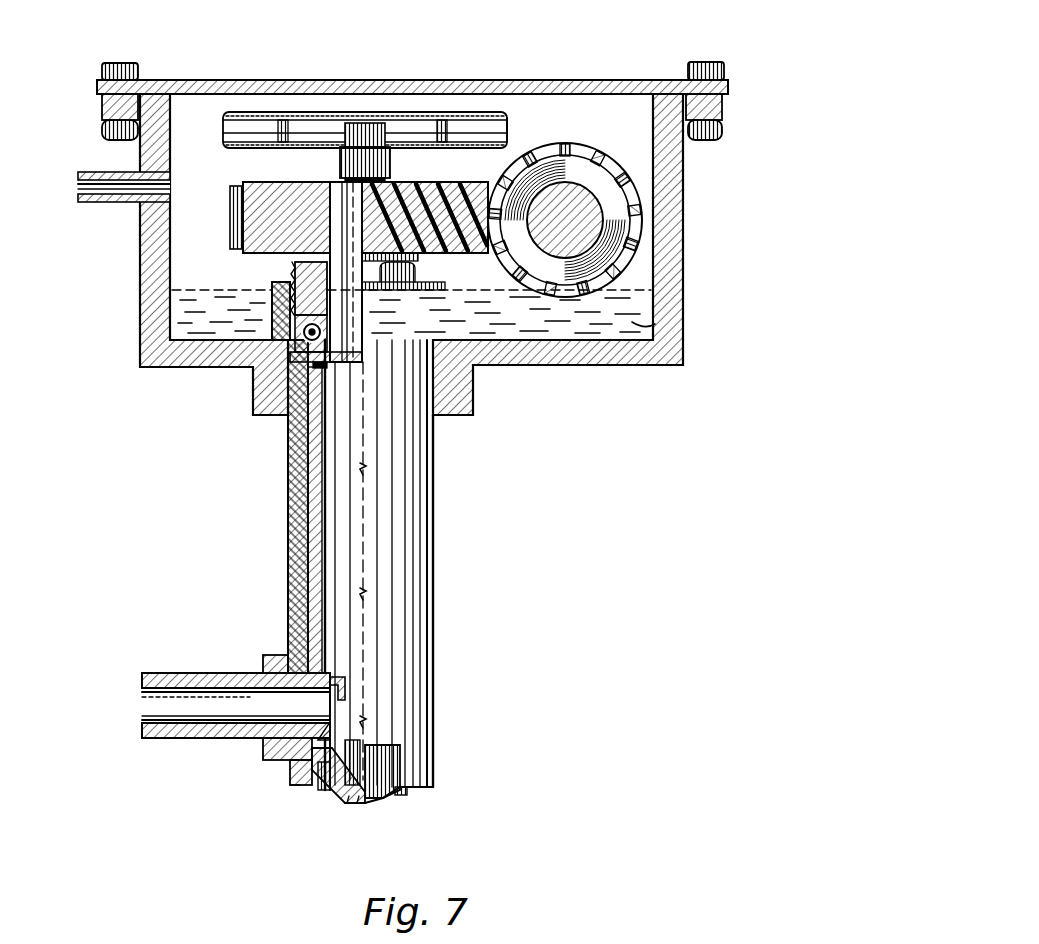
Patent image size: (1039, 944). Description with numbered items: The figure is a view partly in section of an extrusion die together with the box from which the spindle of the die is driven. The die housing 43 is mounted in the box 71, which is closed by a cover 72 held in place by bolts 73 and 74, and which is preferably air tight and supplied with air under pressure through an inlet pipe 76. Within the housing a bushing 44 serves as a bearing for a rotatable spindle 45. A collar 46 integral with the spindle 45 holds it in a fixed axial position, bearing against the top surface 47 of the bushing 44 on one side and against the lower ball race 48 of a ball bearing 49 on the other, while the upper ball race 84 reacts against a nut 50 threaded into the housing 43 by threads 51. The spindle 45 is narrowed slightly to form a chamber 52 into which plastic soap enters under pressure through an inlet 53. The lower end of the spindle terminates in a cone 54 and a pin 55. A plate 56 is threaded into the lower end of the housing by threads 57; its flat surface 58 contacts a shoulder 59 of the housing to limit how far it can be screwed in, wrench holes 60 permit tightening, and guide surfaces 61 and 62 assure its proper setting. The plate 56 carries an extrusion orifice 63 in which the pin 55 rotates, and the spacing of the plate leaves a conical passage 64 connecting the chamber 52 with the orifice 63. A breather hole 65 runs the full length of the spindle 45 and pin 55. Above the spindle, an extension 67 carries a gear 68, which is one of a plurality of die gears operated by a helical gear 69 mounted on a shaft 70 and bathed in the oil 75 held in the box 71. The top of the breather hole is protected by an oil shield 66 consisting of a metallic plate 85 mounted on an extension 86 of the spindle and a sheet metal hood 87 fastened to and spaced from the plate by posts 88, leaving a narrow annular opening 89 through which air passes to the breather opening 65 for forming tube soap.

The die housing 43 is at (280, 320).
The bushing 44 is at (318, 540).
The spindle 45 is at (345, 485).
The collar 46 is at (326, 364).
The top surface of bushing 47 is at (322, 368).
The lower ball race 48 is at (360, 356).
The ball bearing 49 is at (325, 333).
The nut 50 is at (300, 272).
The threads 51 is at (290, 290).
The chamber 52 is at (340, 697).
The inlet 53 is at (172, 703).
The cone 54 is at (375, 780).
The pin 55 is at (362, 802).
The plate 56 is at (318, 790).
The threads 57 is at (290, 775).
The flat surface 58 is at (325, 726).
The shoulder 59 is at (305, 748).
The wrench holes 60 is at (326, 792).
The guide surface 61 is at (360, 748).
The guide surface 62 is at (290, 786).
The extrusion orifice 63 is at (357, 803).
The conical passage 64 is at (348, 803).
The breather hole 65 is at (365, 123).
The oil shield 66 is at (410, 130).
The extension 67 is at (338, 192).
The gear 68 is at (262, 214).
The helical gear 69 is at (640, 240).
The shaft 70 is at (580, 200).
The box 71 is at (140, 315).
The cover 72 is at (553, 80).
The bolt 73 is at (700, 62).
The bolt 74 is at (120, 63).
The oil 75 is at (655, 325).
The inlet pipe 76 is at (78, 185).
The upper ball race 84 is at (330, 320).
The metallic plate 85 is at (252, 148).
The extension of spindle 86 is at (392, 166).
The sheet metal hood 87 is at (258, 118).
The posts 88 is at (290, 130).
The annular opening 89 is at (508, 142).